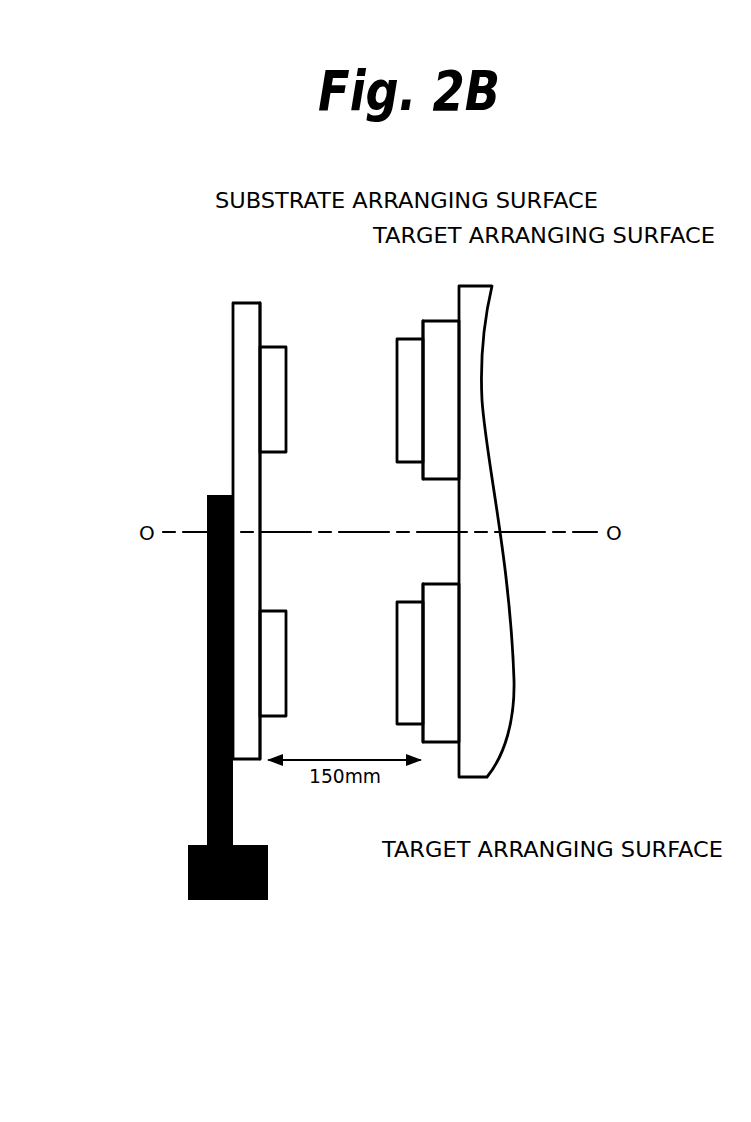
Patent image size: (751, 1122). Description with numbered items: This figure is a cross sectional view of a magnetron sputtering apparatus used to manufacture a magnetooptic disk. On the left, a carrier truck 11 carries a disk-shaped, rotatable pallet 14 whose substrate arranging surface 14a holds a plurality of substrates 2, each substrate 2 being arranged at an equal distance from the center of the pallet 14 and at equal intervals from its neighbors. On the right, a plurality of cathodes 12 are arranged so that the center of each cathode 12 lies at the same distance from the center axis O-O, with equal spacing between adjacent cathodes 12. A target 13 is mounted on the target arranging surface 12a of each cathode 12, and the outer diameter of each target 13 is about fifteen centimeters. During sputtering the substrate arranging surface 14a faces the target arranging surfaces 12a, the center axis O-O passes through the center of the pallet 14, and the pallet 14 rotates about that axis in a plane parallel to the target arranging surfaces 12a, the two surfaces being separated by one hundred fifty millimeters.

The carrier truck 11 is at (215, 535).
The pallet 14 is at (242, 411).
The substrate arranging surface 14a is at (267, 492).
The substrate 2 is at (277, 388).
The cathode 12 is at (440, 391).
The target arranging surface 12a is at (418, 330).
The target 13 is at (412, 448).